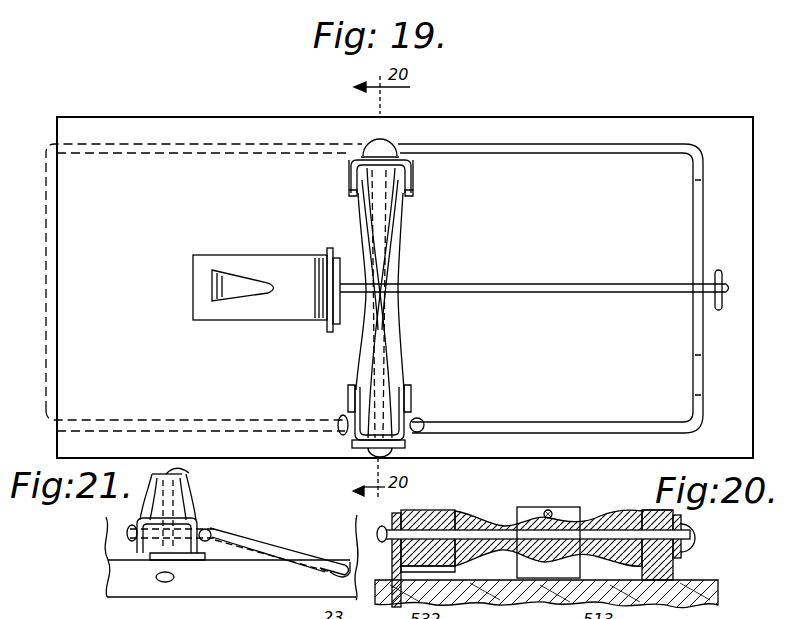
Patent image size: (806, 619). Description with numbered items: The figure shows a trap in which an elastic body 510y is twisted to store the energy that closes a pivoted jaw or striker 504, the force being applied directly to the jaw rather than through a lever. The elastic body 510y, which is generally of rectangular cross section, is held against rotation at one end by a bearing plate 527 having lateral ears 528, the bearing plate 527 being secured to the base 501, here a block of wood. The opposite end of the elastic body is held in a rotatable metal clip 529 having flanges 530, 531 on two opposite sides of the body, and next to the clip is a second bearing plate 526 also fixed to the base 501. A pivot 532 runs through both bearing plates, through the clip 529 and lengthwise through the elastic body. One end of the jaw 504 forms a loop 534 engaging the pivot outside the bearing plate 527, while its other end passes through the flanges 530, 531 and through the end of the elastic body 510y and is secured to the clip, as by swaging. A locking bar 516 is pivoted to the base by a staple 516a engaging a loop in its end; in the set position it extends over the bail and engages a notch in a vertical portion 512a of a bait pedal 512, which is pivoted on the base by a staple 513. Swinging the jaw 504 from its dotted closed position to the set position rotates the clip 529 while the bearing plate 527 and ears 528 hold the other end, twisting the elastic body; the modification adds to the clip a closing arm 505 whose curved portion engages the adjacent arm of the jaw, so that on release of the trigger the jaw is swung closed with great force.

In FIG. 19, the base 501 is at (226, 122).
In FIG. 21, the base 501 is at (110, 578).
In FIG. 20, the base 501 is at (718, 593).
In FIG. 19, the jaw or striker 504 is at (160, 156).
In FIG. 21, the jaw or striker 504 is at (274, 568).
In FIG. 21, the closing arm or actuating arm 505 is at (238, 540).
In FIG. 19, the elastic body 510y is at (385, 223).
In FIG. 21, the elastic body 510y is at (185, 490).
In FIG. 20, the elastic body 510y is at (505, 512).
In FIG. 19, the bait pedal 512 is at (255, 313).
In FIG. 19, the vertical portion of bait pedal 512a is at (340, 252).
In FIG. 20, the vertical portion of bait pedal 512a is at (546, 505).
In FIG. 19, the staple 513 is at (328, 325).
In FIG. 19, the locking bar 516 is at (526, 286).
In FIG. 20, the locking bar 516 is at (550, 512).
In FIG. 19, the staple 516a is at (753, 256).
In FIG. 19, the second bearing plate 526 is at (406, 447).
In FIG. 20, the second bearing plate 526 is at (398, 512).
In FIG. 19, the bearing plate 527 is at (400, 157).
In FIG. 20, the bearing plate 527 is at (673, 563).
In FIG. 19, the lateral ears 528 is at (349, 168).
In FIG. 20, the lateral ears 528 is at (648, 512).
In FIG. 19, the rotatable metal clip 529 is at (366, 447).
In FIG. 21, the rotatable metal clip 529 is at (150, 557).
In FIG. 20, the rotatable metal clip 529 is at (402, 520).
In FIG. 19, the flange of clip 530 is at (350, 392).
In FIG. 21, the flange of clip 530 is at (137, 524).
In FIG. 20, the flange of clip 530 is at (440, 512).
In FIG. 19, the flange of clip 531 is at (410, 400).
In FIG. 21, the flange of clip 531 is at (200, 520).
In FIG. 19, the pivot 532 is at (385, 143).
In FIG. 21, the pivot 532 is at (174, 578).
In FIG. 20, the pivot 532 is at (695, 537).
In FIG. 19, the loop 534 is at (365, 148).
In FIG. 21, the loop 534 is at (152, 565).
In FIG. 20, the loop 534 is at (683, 520).